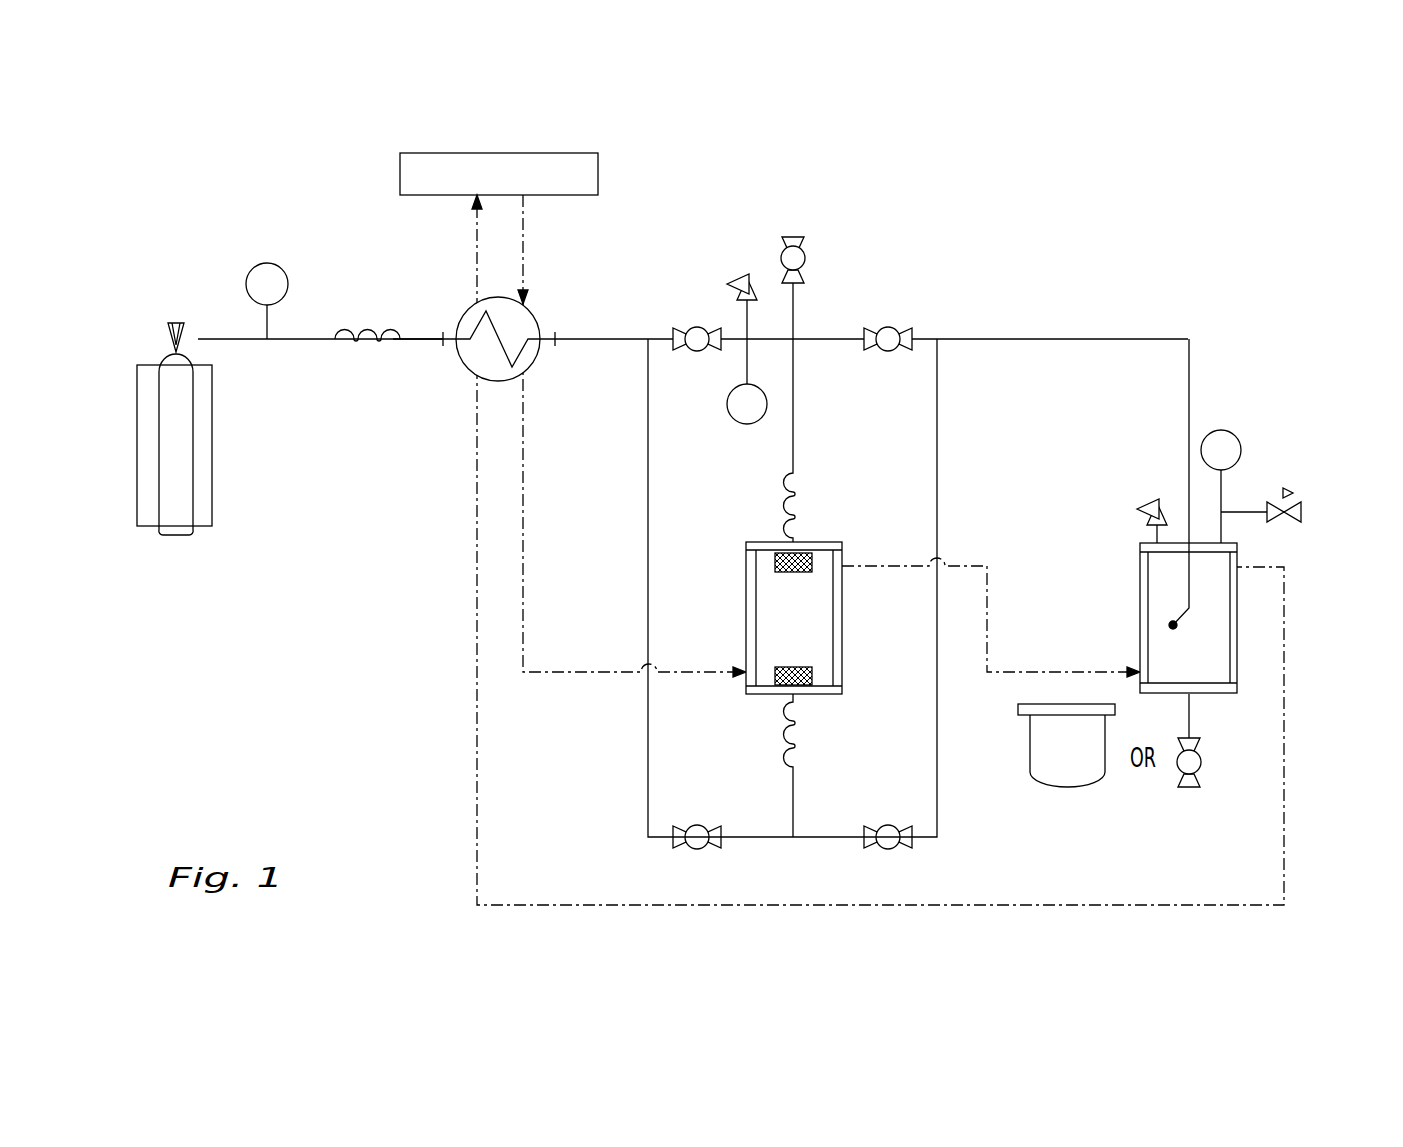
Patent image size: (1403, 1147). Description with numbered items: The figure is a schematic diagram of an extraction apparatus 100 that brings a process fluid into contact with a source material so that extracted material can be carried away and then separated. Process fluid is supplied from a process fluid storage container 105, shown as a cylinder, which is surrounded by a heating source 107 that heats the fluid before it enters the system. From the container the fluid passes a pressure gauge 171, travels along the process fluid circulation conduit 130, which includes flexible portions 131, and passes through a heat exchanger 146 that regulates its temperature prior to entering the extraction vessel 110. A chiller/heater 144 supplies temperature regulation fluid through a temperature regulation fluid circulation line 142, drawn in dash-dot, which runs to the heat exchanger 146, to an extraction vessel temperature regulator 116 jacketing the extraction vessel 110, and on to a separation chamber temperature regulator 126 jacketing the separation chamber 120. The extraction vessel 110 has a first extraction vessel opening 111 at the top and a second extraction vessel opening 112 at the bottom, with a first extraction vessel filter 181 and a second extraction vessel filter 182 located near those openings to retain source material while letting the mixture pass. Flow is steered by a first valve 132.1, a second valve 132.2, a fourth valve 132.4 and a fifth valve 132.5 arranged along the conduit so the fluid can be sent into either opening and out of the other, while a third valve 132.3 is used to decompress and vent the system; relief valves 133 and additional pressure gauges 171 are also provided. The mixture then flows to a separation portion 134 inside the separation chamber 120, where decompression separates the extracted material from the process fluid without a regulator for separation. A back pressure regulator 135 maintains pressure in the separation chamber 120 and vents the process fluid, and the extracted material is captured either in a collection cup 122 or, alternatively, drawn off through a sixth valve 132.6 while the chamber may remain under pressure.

The extraction apparatus 100 is at (1104, 194).
The process fluid storage container 105 is at (170, 470).
The heating source 107 is at (212, 422).
The extraction vessel 110 is at (848, 526).
The first extraction vessel opening 111 is at (778, 540).
The second extraction vessel opening 112 is at (785, 697).
The extraction vessel temperature regulator 116 is at (745, 640).
The separation chamber 120 is at (1245, 714).
The collection cup 122 is at (1065, 750).
The separation chamber temperature regulator 126 is at (1140, 630).
The process fluid circulation conduit 130 is at (1070, 338).
The flexible portions 131 is at (365, 330).
The first valve 132.1 is at (690, 328).
The second valve 132.2 is at (890, 328).
The third valve 132.3 is at (805, 256).
The fourth valve 132.4 is at (697, 848).
The fifth valve 132.5 is at (888, 848).
The sixth valve 132.6 is at (1190, 775).
The relief valve 133 is at (740, 275).
The separation portion 134 is at (1173, 625).
The back pressure regulator 135 is at (1305, 505).
The temperature regulation fluid circulation line 142 is at (476, 598).
The chiller/heater 144 is at (598, 175).
The heat exchanger 146 is at (465, 365).
The pressure gauge 171 is at (283, 270).
The first extraction vessel filter 181 is at (790, 572).
The second extraction vessel filter 182 is at (800, 665).